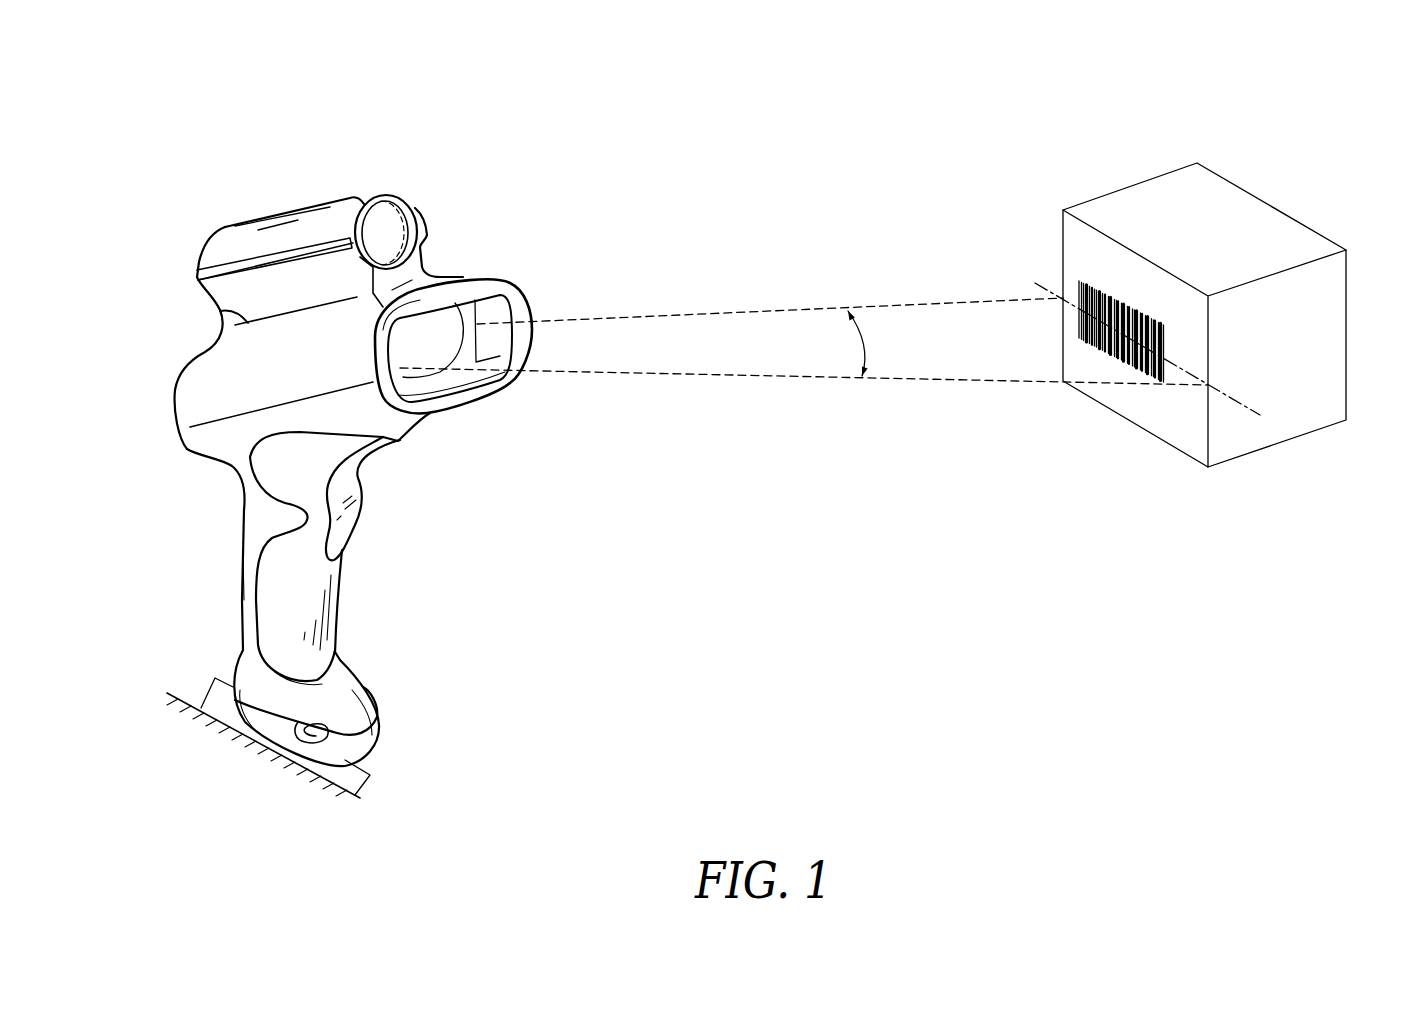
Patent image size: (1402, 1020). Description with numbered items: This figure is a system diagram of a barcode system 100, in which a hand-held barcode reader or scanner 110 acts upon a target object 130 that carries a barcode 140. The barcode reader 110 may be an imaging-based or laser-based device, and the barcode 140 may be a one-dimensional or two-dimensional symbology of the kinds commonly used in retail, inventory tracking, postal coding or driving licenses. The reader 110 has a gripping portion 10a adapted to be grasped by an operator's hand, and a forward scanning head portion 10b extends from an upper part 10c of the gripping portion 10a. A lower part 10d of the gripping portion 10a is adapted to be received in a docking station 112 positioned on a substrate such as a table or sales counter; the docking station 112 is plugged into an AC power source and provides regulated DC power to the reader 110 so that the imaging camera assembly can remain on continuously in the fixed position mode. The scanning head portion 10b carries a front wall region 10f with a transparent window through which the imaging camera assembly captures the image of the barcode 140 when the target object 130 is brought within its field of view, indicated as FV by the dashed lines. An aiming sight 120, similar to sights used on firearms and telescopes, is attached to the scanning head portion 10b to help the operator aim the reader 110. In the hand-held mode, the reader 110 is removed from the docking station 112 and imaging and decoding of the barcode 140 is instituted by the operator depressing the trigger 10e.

The barcode system 100 is at (737, 429).
The hand-held barcode reader or scanner 110 is at (305, 470).
The aiming sight 120 is at (288, 225).
The gripping portion 10a is at (273, 636).
The scanning head portion 10b is at (220, 313).
The upper part of the gripping portion 10c is at (253, 508).
The lower part of the gripping portion 10d is at (377, 718).
The trigger 10e is at (353, 515).
The front wall region 10f is at (467, 277).
The docking station 112 is at (366, 777).
The target object 130 is at (1204, 344).
The barcode 140 is at (1117, 380).